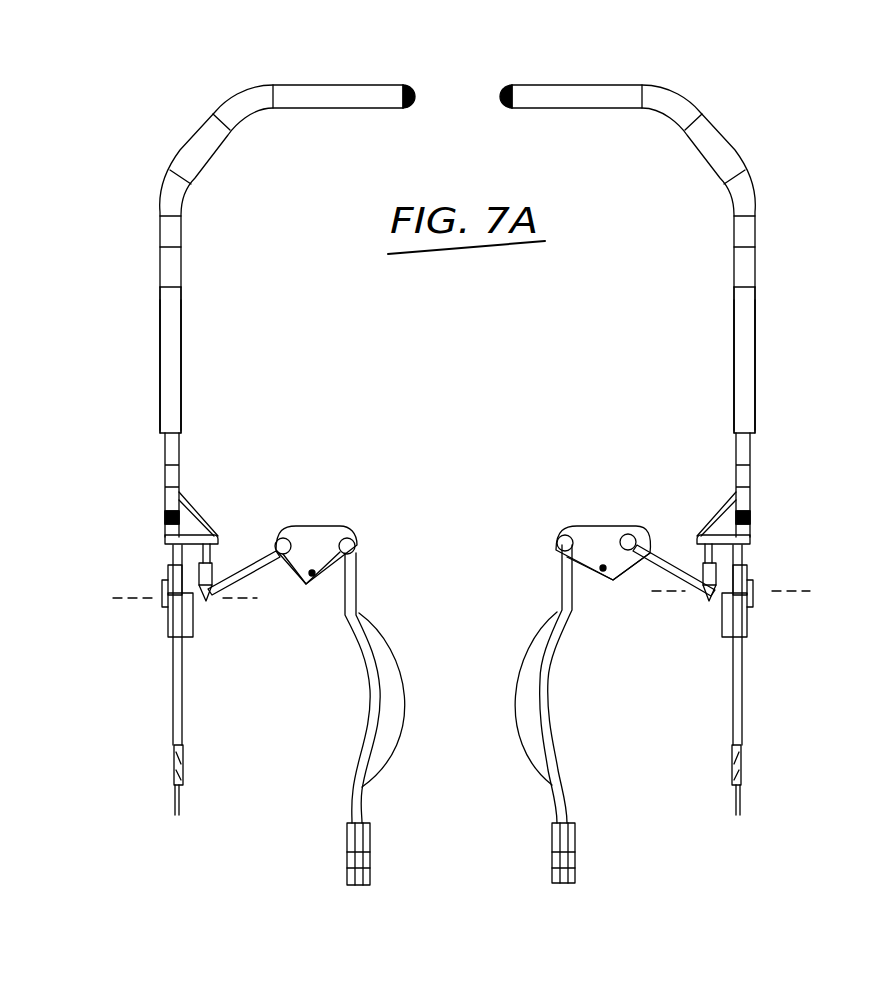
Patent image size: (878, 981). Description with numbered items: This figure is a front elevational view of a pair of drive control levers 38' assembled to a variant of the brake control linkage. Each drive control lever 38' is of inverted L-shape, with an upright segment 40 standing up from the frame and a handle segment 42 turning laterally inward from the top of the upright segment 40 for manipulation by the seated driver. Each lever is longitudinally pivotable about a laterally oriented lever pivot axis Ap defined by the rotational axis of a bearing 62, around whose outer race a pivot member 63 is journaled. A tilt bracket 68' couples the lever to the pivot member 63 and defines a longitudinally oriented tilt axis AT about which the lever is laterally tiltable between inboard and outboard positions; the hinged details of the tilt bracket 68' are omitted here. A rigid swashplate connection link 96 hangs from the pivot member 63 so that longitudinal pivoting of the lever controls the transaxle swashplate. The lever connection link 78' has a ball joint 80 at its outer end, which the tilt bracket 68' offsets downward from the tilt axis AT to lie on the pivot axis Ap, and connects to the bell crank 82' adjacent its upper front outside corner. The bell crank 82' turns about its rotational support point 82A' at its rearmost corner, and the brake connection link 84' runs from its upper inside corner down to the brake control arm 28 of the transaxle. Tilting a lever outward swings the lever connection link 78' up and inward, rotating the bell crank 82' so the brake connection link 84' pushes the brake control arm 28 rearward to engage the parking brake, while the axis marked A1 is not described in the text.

The handle segment 42 is at (356, 97).
The drive control lever 38' is at (498, 412).
The upright segment 40 is at (179, 413).
The first pivot axis A1 is at (172, 517).
The tilt axis AT is at (752, 513).
The tilt bracket 68' is at (457, 499).
The ball joint 80 is at (200, 594).
The bearing 62 is at (162, 582).
The pivot member 63 is at (165, 612).
The lever pivot axis Ap is at (825, 556).
The swashplate connection link 96 is at (187, 706).
The lever connection link 78' is at (461, 543).
The bell crank 82' is at (462, 527).
The rotational support point 82A' is at (456, 601).
The brake connection link 84' is at (458, 684).
The brake control arm 28 is at (350, 853).